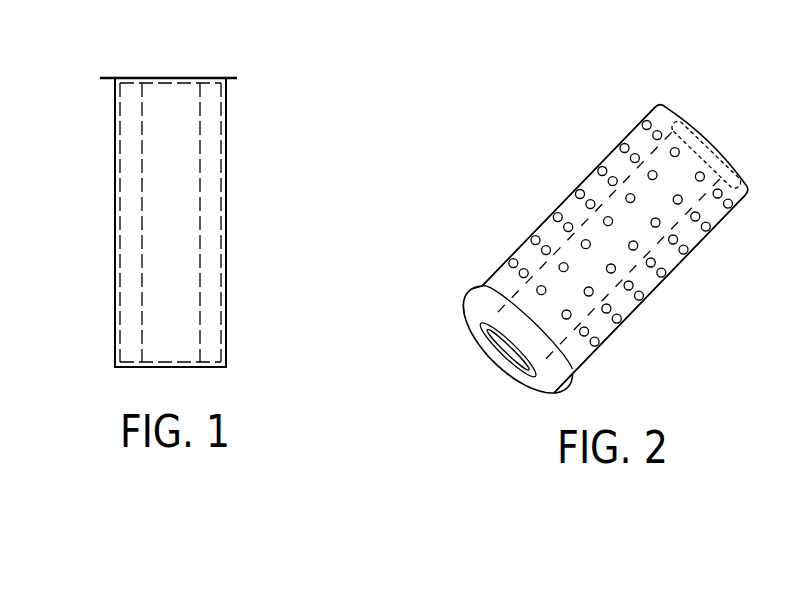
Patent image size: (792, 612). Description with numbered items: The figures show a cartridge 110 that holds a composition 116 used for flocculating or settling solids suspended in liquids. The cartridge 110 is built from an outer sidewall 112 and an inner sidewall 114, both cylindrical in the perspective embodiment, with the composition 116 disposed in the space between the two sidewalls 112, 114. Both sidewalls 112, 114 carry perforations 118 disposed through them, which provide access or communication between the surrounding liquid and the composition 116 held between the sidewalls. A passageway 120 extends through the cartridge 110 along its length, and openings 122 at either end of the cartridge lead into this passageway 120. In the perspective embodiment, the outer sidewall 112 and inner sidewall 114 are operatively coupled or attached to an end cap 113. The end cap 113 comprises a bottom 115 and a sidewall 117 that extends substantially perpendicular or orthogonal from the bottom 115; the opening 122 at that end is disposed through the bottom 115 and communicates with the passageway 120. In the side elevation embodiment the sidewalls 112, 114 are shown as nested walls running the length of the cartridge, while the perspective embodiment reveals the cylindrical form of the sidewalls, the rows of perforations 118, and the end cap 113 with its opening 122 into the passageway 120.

In FIG. 1, the cartridge 110 is at (230, 350).
In FIG. 2, the cartridge 110 is at (497, 254).
In FIG. 1, the outer sidewall 112 is at (227, 315).
In FIG. 2, the outer sidewall 112 is at (597, 167).
In FIG. 2, the end cap 113 is at (468, 291).
In FIG. 1, the inner sidewall 114 is at (200, 212).
In FIG. 2, the inner sidewall 114 is at (646, 147).
In FIG. 2, the bottom 115 is at (466, 317).
In FIG. 1, the composition 116 is at (210, 171).
In FIG. 2, the composition 116 is at (725, 218).
In FIG. 2, the sidewall 117 is at (565, 383).
In FIG. 1, the perforations 118 is at (142, 200).
In FIG. 2, the perforations 118 is at (563, 242).
In FIG. 1, the passageway 120 is at (187, 117).
In FIG. 2, the passageway 120 is at (627, 257).
In FIG. 1, the openings 122 is at (183, 78).
In FIG. 2, the openings 122 is at (509, 372).